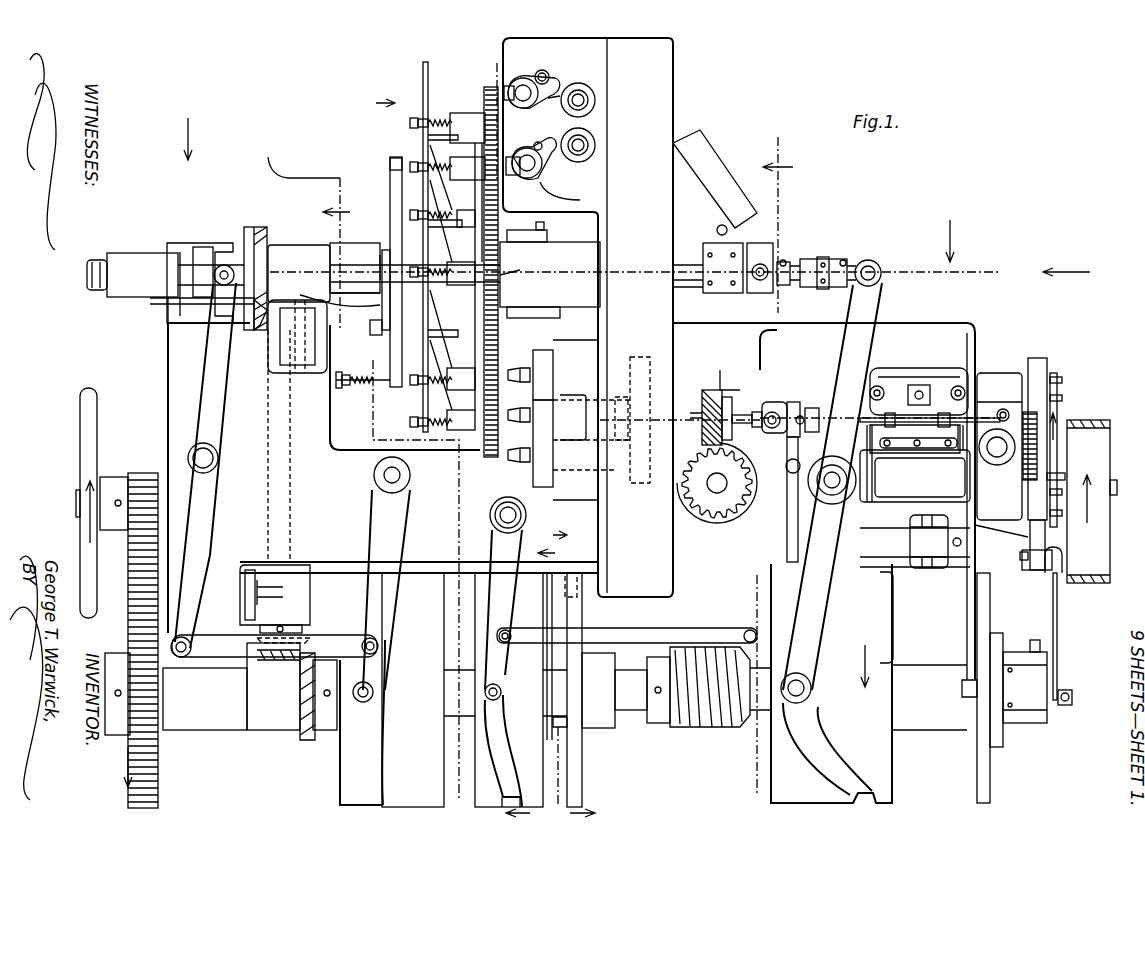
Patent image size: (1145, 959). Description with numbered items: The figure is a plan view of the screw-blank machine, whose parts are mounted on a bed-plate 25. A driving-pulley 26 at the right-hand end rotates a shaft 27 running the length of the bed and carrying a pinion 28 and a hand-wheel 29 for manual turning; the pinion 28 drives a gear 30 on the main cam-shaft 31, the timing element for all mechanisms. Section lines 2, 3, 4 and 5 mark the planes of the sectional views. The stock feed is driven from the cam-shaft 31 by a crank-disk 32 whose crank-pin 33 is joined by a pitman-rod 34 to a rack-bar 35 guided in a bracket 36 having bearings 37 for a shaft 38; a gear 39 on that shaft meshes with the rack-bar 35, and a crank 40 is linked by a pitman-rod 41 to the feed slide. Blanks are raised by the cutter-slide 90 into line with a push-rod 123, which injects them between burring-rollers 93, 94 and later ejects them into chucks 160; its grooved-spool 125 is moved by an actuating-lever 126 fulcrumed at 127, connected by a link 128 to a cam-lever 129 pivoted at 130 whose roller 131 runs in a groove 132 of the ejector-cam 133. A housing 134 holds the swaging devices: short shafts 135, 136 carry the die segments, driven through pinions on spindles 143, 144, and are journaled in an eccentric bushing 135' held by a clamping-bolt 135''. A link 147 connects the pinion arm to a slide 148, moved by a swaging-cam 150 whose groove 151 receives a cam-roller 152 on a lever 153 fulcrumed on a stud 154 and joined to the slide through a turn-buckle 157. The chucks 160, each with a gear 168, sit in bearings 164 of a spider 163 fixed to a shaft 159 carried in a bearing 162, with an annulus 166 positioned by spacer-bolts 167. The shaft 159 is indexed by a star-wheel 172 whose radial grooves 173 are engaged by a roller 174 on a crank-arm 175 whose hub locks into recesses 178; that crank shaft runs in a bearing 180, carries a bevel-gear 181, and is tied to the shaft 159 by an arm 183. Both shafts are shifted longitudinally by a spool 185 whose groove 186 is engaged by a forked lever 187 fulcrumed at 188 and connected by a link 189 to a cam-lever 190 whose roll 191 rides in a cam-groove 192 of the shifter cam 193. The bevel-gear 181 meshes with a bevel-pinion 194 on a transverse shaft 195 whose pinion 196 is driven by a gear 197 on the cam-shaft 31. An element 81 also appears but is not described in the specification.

The section line 2 is at (359, 479).
The section line 3 is at (494, 67).
The section line 4 is at (495, 51).
The section line 5 is at (766, 463).
The bed-plate 25 is at (168, 347).
The driving-pulley 26 is at (1090, 420).
The shaft 27 is at (1112, 495).
The pinion 28 is at (140, 473).
The hand-wheel 29 is at (82, 430).
The gear 30 is at (138, 622).
The main cam-shaft 31 is at (722, 700).
The crank-disk 32 is at (1040, 715).
The crank-pin 33 is at (1072, 695).
The pitman-rod 34 is at (1058, 660).
The rack-bar 35 is at (1038, 570).
The bracket 36 is at (1005, 365).
The bearings 37 is at (997, 465).
The shaft 38 is at (1005, 447).
The gear 39 is at (1035, 410).
The crank 40 is at (1045, 375).
The pitman-rod 41 is at (988, 415).
The plate 81 is at (580, 700).
The cutter-slide 90 is at (585, 420).
The roller 93 is at (540, 470).
The roller 94 is at (545, 360).
The push-rod 123 is at (742, 412).
The grooved-spool 125 is at (790, 410).
The actuating-lever 126 is at (720, 522).
The fulcrum 127 is at (717, 506).
The link 128 is at (620, 640).
The cam-lever 129 is at (500, 545).
The pivot 130 is at (492, 516).
The roller 131 is at (500, 694).
The groove 132 is at (495, 735).
The ejector-cam 133 is at (530, 775).
The housing 134 is at (673, 84).
The short shaft 135 is at (553, 113).
The eccentric bushing 135' is at (559, 99).
The clamping-bolt 135'' is at (607, 72).
The short shaft 136 is at (580, 200).
The spindle 143 is at (580, 100).
The spindle 144 is at (580, 145).
The link 147 is at (690, 160).
The slide 148 is at (770, 250).
The swaging-cam 150 is at (880, 765).
The groove 151 is at (835, 760).
The cam-roller 152 is at (812, 692).
The lever 153 is at (880, 305).
The stud 154 is at (835, 470).
The turn-buckle 157 is at (830, 260).
The shaft 159 is at (355, 268).
The chucks 160 is at (522, 175).
The bearing 162 is at (298, 262).
The spider 163 is at (465, 112).
The bearings 164 is at (470, 113).
The ring 166 is at (425, 90).
The spacer-bolts 167 is at (410, 123).
The gear 168 is at (500, 300).
The star-wheel 172 is at (428, 215).
The radial grooves 173 is at (400, 158).
The roller 174 is at (385, 330).
The crank-arm 175 is at (380, 300).
The recesses 178 is at (380, 385).
The bearing 180 is at (190, 244).
The bevel-gear 181 is at (258, 236).
The arm 183 is at (133, 265).
The spool 185 is at (205, 250).
The groove 186 is at (226, 265).
The lever 187 is at (207, 378).
The fulcrum 188 is at (212, 462).
The link 189 is at (217, 636).
The cam-lever 190 is at (378, 520).
The roll 191 is at (385, 705).
The cam-groove 192 is at (355, 780).
The shifter cam 193 is at (340, 755).
The bevel-pinion 194 is at (262, 335).
The transverse shaft 195 is at (292, 480).
The pinion 196 is at (272, 660).
The gear 197 is at (300, 730).